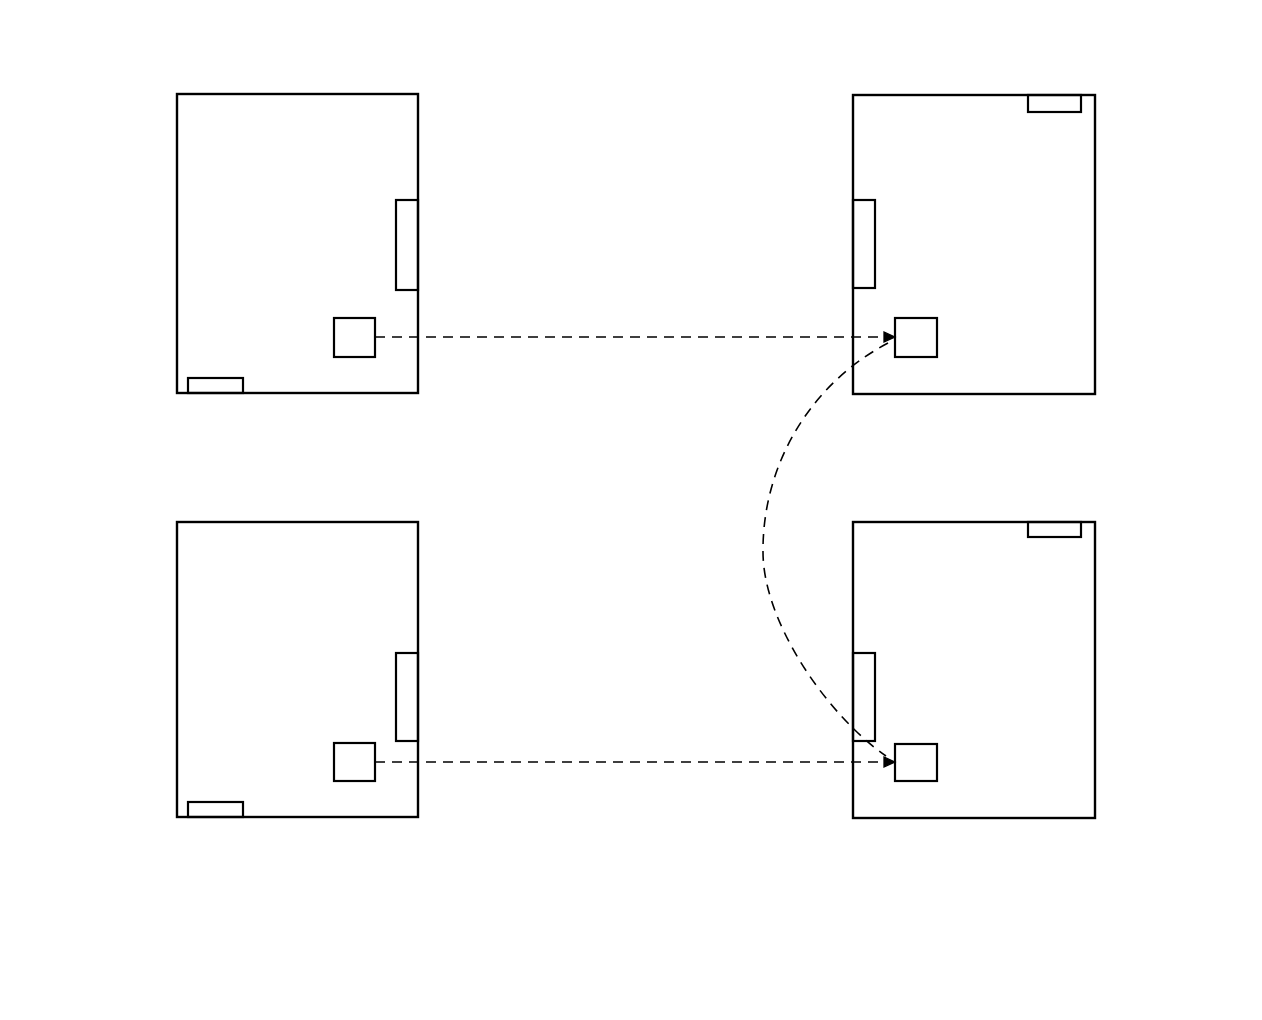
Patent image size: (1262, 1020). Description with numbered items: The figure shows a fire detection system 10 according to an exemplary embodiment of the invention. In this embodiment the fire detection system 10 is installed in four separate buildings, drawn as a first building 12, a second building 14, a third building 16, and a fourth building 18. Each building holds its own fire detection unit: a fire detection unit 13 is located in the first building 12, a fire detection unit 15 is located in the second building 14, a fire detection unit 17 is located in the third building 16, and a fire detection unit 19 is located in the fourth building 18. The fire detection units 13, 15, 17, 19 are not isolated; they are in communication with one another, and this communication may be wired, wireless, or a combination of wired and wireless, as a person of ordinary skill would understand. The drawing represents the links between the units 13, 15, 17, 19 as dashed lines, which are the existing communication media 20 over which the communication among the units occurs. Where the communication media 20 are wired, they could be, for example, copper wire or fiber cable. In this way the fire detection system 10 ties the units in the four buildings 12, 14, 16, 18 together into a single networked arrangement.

The fire detection system 10 is at (1182, 75).
The building 12 is at (400, 94).
The fire detection unit 13 is at (352, 318).
The building 14 is at (1078, 95).
The fire detection unit 15 is at (916, 318).
The building 16 is at (1078, 522).
The fire detection unit 17 is at (916, 744).
The building 18 is at (400, 522).
The fire detection unit 19 is at (352, 743).
The communication media 20 is at (637, 340).